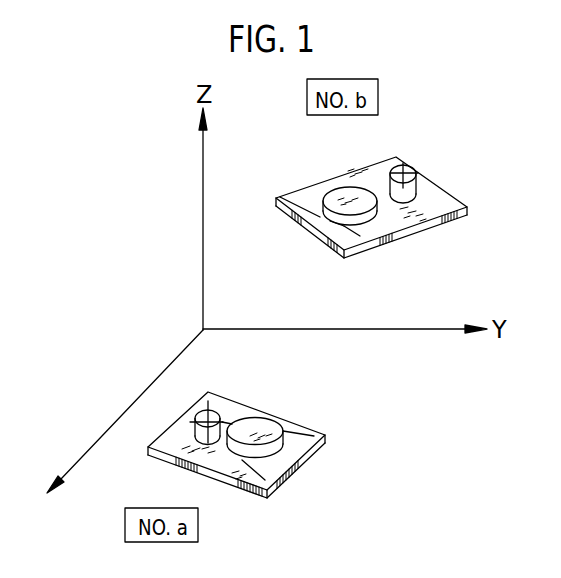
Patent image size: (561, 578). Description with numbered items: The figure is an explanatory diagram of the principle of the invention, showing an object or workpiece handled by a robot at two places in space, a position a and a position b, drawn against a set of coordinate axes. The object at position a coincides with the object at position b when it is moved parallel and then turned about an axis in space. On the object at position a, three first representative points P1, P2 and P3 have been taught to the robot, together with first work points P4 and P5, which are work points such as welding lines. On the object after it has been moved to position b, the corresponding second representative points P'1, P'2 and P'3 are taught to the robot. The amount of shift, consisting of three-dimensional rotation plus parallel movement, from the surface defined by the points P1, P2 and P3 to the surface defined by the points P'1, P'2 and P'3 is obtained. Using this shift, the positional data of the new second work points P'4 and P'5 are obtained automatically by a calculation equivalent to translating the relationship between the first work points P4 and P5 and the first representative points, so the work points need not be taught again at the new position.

The first representative point P1 is at (209, 421).
The first representative point P2 is at (258, 497).
The first representative point P3 is at (312, 437).
The first work point P4 is at (283, 450).
The first work point P5 is at (270, 417).
The second representative point P'1 is at (443, 172).
The second representative point P'2 is at (296, 169).
The second representative point P'3 is at (371, 229).
The second work point P'4 is at (314, 257).
The second work point P'5 is at (395, 229).